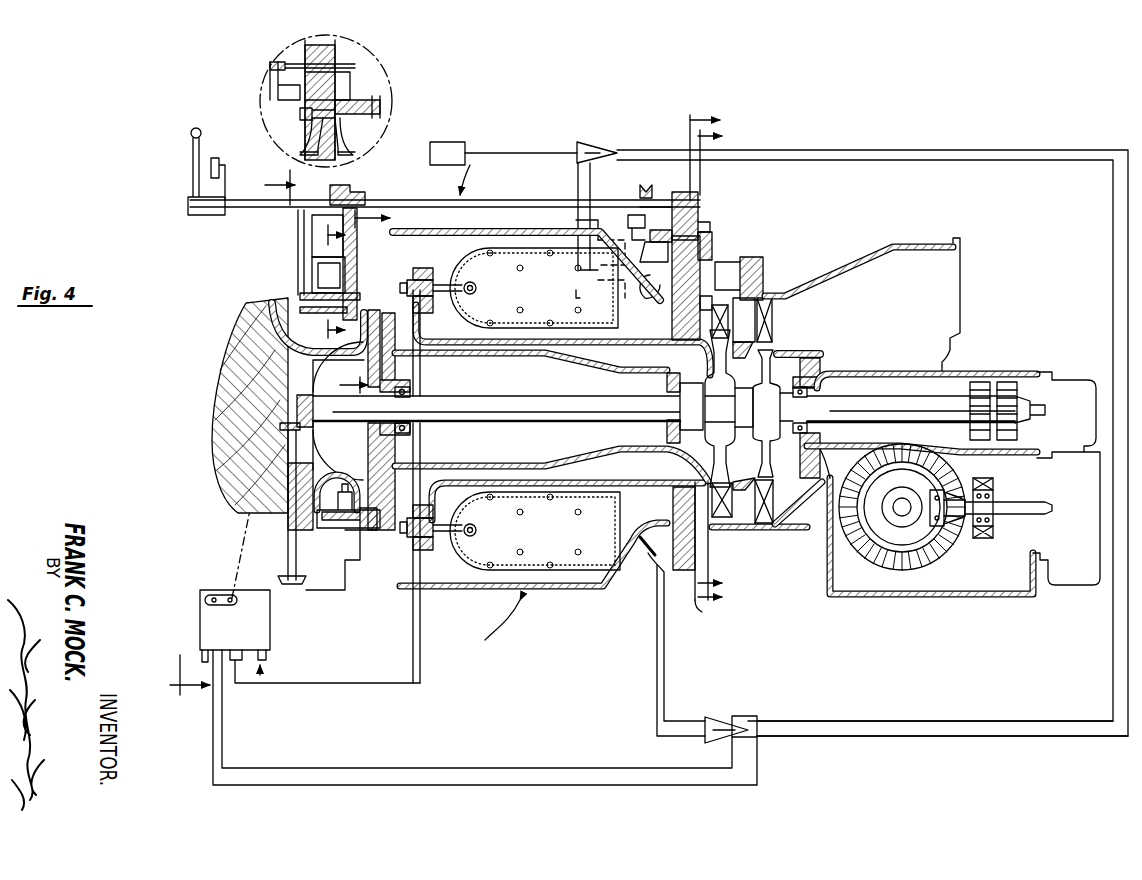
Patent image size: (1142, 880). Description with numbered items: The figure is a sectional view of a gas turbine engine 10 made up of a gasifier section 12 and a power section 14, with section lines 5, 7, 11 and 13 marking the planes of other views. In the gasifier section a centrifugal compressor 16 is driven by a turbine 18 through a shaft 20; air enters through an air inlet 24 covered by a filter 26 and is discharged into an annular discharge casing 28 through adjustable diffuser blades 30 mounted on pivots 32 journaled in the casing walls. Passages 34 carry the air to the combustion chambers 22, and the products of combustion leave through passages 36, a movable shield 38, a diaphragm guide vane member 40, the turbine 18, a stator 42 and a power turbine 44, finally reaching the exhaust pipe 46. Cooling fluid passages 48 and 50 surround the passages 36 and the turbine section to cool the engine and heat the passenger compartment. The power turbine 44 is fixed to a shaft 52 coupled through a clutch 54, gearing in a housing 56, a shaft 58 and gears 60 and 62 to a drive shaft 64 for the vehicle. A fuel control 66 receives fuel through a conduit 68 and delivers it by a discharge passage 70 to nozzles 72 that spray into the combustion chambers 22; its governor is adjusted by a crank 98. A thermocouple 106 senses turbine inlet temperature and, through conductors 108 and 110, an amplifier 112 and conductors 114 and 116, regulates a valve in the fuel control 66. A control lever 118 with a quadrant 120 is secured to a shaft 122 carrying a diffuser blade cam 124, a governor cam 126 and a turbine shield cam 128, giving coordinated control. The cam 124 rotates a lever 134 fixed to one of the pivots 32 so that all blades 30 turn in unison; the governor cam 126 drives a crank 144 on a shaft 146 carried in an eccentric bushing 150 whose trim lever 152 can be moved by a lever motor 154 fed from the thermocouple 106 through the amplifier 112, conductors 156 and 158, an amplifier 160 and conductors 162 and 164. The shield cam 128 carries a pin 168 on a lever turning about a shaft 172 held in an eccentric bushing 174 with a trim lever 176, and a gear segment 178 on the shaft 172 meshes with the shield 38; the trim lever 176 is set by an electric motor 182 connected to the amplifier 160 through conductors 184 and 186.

The section line 5 is at (370, 302).
The section line 7 is at (336, 277).
The gas turbine engine 10 is at (480, 652).
The section line 11 is at (721, 356).
The gasifier section 12 is at (494, 188).
The section line 13 is at (222, 434).
The power section 14 is at (978, 250).
The compressor 16 is at (356, 443).
The turbine 18 is at (730, 413).
The shaft 20 is at (494, 397).
The combustion chambers 22 is at (538, 297).
The air inlet 24 is at (318, 416).
The filter 26 is at (226, 470).
The discharge casing 28 is at (380, 585).
The diffuser blades 30 is at (372, 292).
The pivots 32 is at (375, 298).
The passages 34 is at (424, 259).
The passages 36 is at (649, 334).
The movable shield 38 is at (696, 504).
The diaphragm guide vane member 40 is at (707, 317).
The stator 42 is at (765, 322).
The power turbine 44 is at (778, 413).
The exhaust pipe 46 is at (911, 320).
The cooling fluid passages 48 is at (697, 612).
The cooling fluid passages 50 is at (740, 270).
The shaft 52 is at (895, 408).
The clutch 54 is at (990, 382).
The housing 56 is at (1066, 462).
The shaft 58 is at (1018, 503).
The gear 60 is at (950, 525).
The gear 62 is at (945, 490).
The drive shaft 64 is at (900, 505).
The fuel control 66 is at (263, 617).
The conduit 68 is at (268, 658).
The discharge passage 70 is at (300, 683).
The nozzles 72 is at (462, 286).
The crank 98 is at (218, 604).
The thermocouple 106 is at (634, 540).
The conductor 108 is at (657, 686).
The conductor 110 is at (664, 670).
The amplifier 112 is at (712, 716).
The conductor 114 is at (445, 768).
The conductor 116 is at (440, 785).
The control lever 118 is at (192, 130).
The quadrant 120 is at (218, 170).
The shaft 122 is at (360, 78).
The diffuser blade cam 124 is at (292, 68).
The governor cam 126 is at (315, 58).
The turbine shield cam 128 is at (646, 198).
The lever 134 is at (330, 312).
The crank 144 is at (308, 150).
The shaft 146 is at (316, 112).
The eccentric bushing 150 is at (360, 106).
The trim lever 152 is at (345, 152).
The lever motor 154 is at (450, 142).
The conductor 156 is at (1010, 721).
The conductor 158 is at (1010, 737).
The amplifier 160 is at (590, 142).
The conductor 162 is at (500, 152).
The conductor 164 is at (580, 163).
The pin 168 is at (628, 230).
The shaft 172 is at (712, 245).
The eccentric bushing 174 is at (680, 210).
The trim lever 176 is at (640, 282).
The gear segment 178 is at (705, 228).
The electric motor 182 is at (612, 296).
The conductor 184 is at (586, 190).
The conductor 186 is at (585, 200).